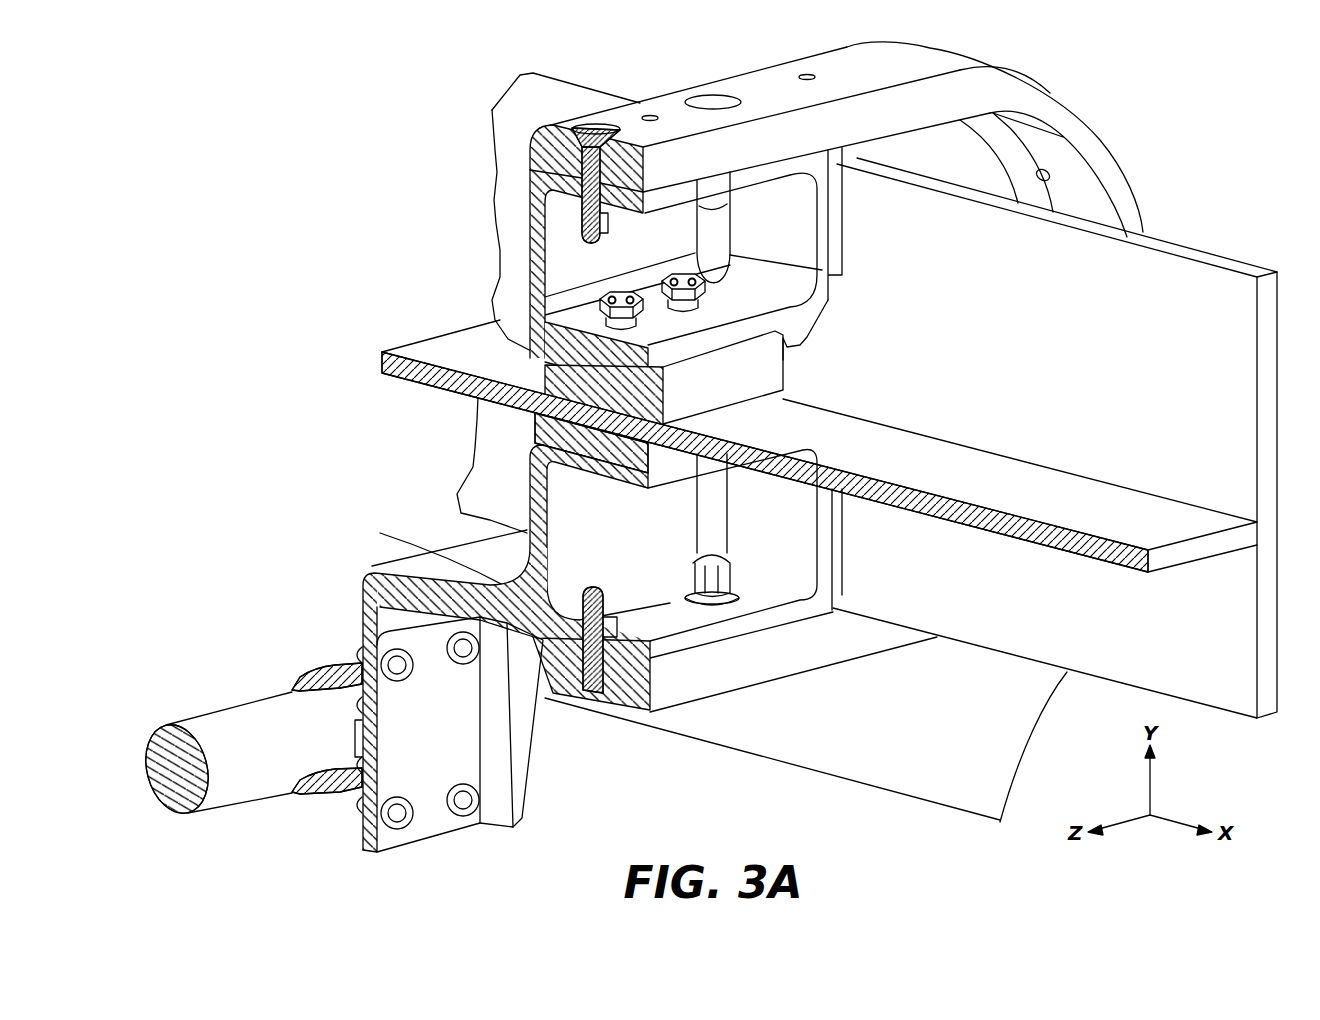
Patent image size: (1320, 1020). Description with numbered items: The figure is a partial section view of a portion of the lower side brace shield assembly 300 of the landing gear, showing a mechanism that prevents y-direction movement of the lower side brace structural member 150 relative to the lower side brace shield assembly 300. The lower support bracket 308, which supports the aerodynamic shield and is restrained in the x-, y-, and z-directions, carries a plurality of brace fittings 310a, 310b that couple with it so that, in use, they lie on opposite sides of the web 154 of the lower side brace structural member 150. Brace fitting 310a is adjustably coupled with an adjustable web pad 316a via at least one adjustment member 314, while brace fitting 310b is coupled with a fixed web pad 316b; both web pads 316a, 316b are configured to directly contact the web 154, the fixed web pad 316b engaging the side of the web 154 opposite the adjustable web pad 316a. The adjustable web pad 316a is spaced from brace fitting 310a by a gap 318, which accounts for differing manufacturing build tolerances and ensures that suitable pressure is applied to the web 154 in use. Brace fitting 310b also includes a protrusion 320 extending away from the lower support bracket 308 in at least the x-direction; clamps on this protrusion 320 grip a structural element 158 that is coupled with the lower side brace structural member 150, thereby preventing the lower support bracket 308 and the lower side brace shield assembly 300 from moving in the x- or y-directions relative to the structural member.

The lower side brace shield assembly 300 is at (1217, 157).
The lower support bracket 308 is at (1045, 97).
The lower side brace structural member 150 is at (1195, 272).
The web 154 is at (427, 378).
The structural element 158 is at (218, 720).
The brace fitting 310a is at (540, 220).
The brace fitting 310b is at (520, 592).
The adjustment member 314 is at (606, 294).
The adjustable web pad 316a is at (545, 372).
The fixed web pad 316b is at (527, 427).
The gap 318 is at (547, 342).
The protrusion 320 is at (372, 578).